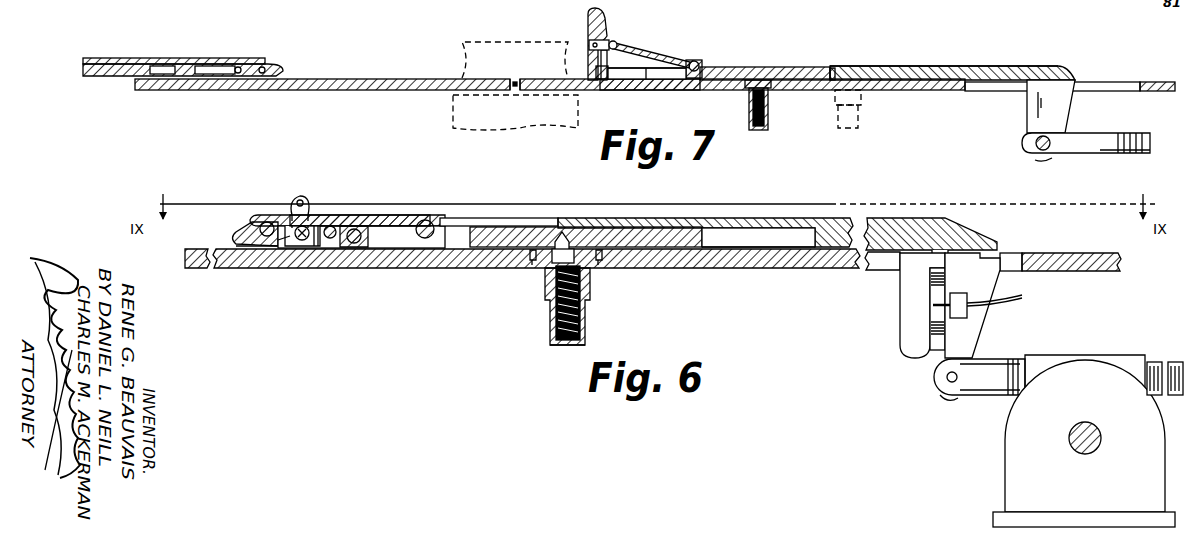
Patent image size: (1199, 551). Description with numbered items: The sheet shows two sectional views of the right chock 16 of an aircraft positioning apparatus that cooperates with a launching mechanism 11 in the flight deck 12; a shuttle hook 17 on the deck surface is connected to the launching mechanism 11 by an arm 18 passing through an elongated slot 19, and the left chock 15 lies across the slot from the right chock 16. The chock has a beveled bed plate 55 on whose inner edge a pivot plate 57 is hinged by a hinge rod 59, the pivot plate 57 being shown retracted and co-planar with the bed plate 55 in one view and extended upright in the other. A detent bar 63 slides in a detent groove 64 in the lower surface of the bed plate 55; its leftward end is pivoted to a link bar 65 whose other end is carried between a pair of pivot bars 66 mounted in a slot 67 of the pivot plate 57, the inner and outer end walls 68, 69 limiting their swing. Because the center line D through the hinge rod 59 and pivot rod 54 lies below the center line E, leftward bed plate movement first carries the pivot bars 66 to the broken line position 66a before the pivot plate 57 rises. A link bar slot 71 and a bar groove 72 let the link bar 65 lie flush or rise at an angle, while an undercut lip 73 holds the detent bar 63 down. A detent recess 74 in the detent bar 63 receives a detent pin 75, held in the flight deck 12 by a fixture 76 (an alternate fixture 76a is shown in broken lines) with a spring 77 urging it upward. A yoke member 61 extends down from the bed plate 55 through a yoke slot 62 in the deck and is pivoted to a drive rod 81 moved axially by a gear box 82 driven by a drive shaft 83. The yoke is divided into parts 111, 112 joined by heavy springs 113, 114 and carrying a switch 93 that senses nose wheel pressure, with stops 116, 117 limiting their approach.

In FIG. 7, the launching mechanism 11 is at (455, 118).
In FIG. 7, the flight deck 12 is at (392, 90).
In FIG. 6, the flight deck 12 is at (722, 270).
In FIG. 7, the left chock 15 is at (233, 56).
In FIG. 7, the right chock 16 is at (994, 63).
In FIG. 6, the right chock 16 is at (714, 216).
In FIG. 7, the shuttle hook 17 is at (480, 42).
In FIG. 7, the arm 18 is at (517, 92).
In FIG. 7, the elongated slot 19 is at (515, 78).
In FIG. 6, the pivot rod 54 is at (300, 246).
In FIG. 7, the bed plate 55 is at (618, 46).
In FIG. 6, the bed plate 55 is at (925, 218).
In FIG. 7, the pivot plate 57 is at (607, 20).
In FIG. 6, the pivot plate 57 is at (238, 243).
In FIG. 7, the hinge rod 59 is at (603, 84).
In FIG. 6, the hinge rod 59 is at (348, 246).
In FIG. 7, the yoke member 61 is at (1030, 116).
In FIG. 6, the yoke member 61 is at (876, 360).
In FIG. 7, the yoke slot 62 is at (995, 92).
In FIG. 6, the yoke slot 62 is at (880, 268).
In FIG. 7, the detent bar 63 is at (808, 67).
In FIG. 6, the detent bar 63 is at (688, 240).
In FIG. 7, the detent groove 64 is at (675, 72).
In FIG. 6, the detent groove 64 is at (792, 242).
In FIG. 7, the link bar 65 is at (676, 62).
In FIG. 6, the link bar 65 is at (381, 218).
In FIG. 7, the pivot bars 66 is at (609, 45).
In FIG. 6, the pivot bars 66 is at (289, 243).
In FIG. 6, the broken line position of pivot bars 66a is at (303, 190).
In FIG. 6, the slot 67 is at (318, 246).
In FIG. 6, the inner end wall 68 is at (260, 250).
In FIG. 6, the outer end wall 69 is at (326, 228).
In FIG. 7, the link bar slot 71 is at (688, 66).
In FIG. 6, the link bar slot 71 is at (483, 218).
In FIG. 7, the bar groove 72 is at (650, 64).
In FIG. 6, the bar groove 72 is at (402, 218).
In FIG. 7, the undercut lip 73 is at (647, 86).
In FIG. 6, the undercut lip 73 is at (738, 228).
In FIG. 6, the detent recess 74 is at (575, 236).
In FIG. 6, the detent pin 75 is at (562, 256).
In FIG. 7, the fixture 76 is at (770, 112).
In FIG. 6, the fixture 76 is at (592, 298).
In FIG. 7, the fixture (alternate position) 76a is at (862, 115).
In FIG. 6, the spring 77 is at (557, 346).
In FIG. 7, the drive rod 81 is at (1102, 133).
In FIG. 6, the drive rod 81 is at (978, 396).
In FIG. 6, the gear box 82 is at (1012, 455).
In FIG. 6, the drive shaft 83 is at (1102, 438).
In FIG. 6, the switch 93 is at (955, 293).
In FIG. 6, the yoke part 111 is at (905, 315).
In FIG. 6, the yoke part 112 is at (985, 297).
In FIG. 6, the heavy spring 113 is at (928, 278).
In FIG. 6, the heavy spring 114 is at (928, 330).
In FIG. 6, the stop 116 is at (935, 366).
In FIG. 6, the stop 117 is at (948, 250).
In FIG. 6, the center line E is at (228, 222).
In FIG. 6, the center line D is at (215, 238).